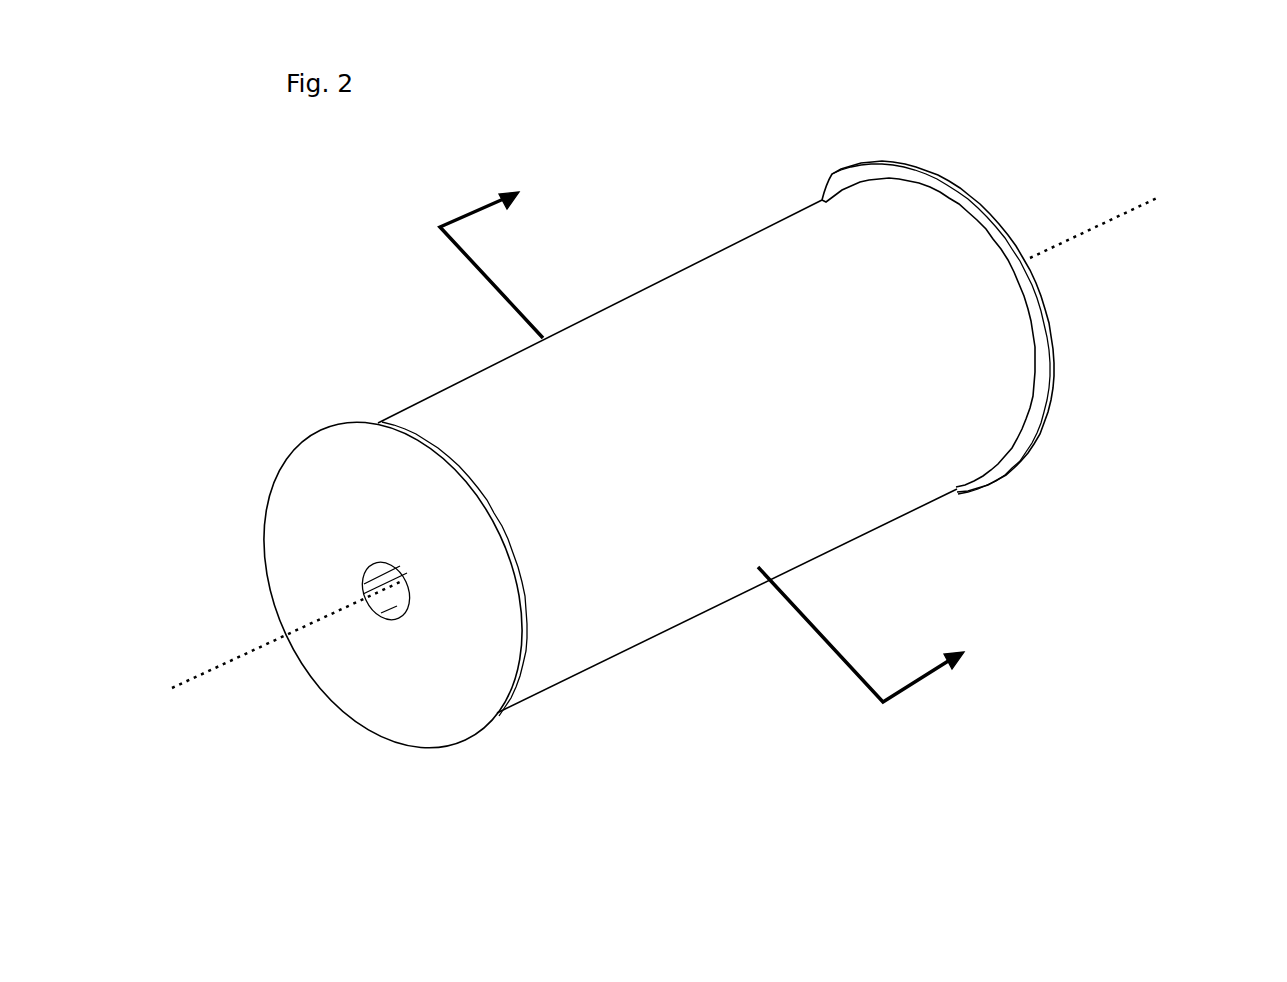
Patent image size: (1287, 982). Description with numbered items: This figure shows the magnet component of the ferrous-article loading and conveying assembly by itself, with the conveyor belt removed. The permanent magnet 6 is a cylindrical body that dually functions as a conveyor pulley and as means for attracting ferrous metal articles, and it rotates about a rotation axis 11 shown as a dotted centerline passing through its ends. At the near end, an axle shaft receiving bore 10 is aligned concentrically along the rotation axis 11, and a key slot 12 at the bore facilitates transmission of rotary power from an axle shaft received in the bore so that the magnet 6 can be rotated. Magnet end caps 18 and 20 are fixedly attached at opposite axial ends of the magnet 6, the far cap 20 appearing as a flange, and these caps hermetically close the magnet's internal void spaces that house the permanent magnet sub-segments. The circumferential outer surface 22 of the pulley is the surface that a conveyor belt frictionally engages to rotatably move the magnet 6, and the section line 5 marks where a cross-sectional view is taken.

The section line 5- 5 is at (713, 442).
The permanent magnet 6 is at (671, 224).
The axle shaft receiving bore 10 is at (383, 612).
The rotation axis 11 is at (225, 662).
The key slot 12 is at (362, 571).
The magnet end cap 18 is at (347, 467).
The magnet end cap 20 is at (1050, 340).
The circumferential outer surface 22 is at (582, 648).